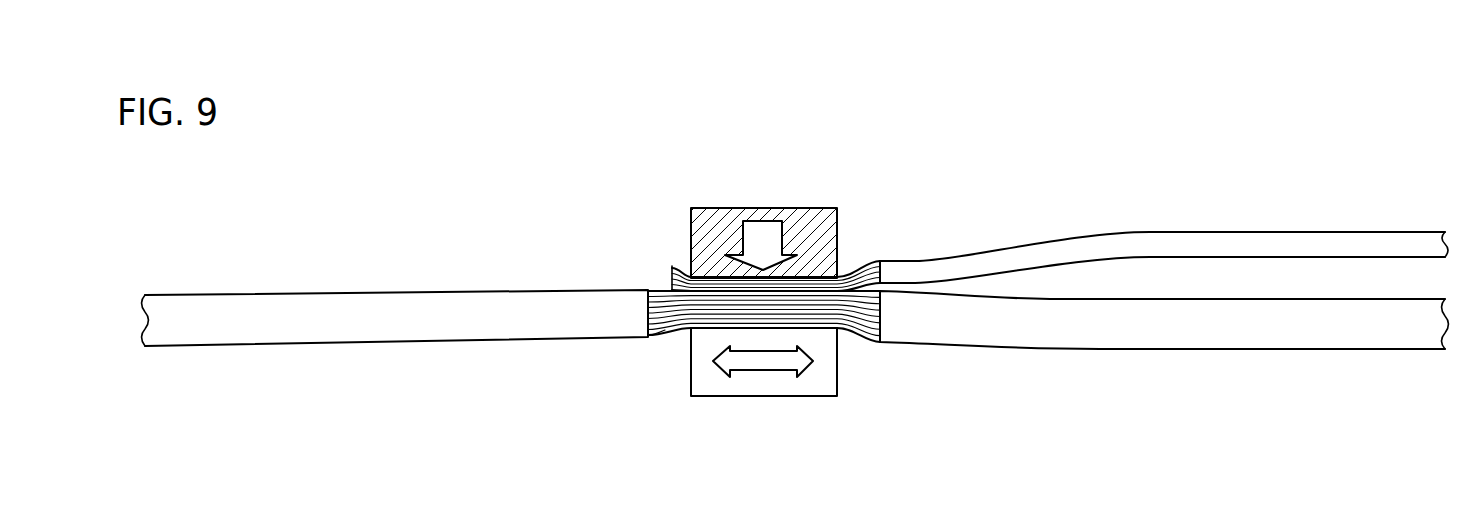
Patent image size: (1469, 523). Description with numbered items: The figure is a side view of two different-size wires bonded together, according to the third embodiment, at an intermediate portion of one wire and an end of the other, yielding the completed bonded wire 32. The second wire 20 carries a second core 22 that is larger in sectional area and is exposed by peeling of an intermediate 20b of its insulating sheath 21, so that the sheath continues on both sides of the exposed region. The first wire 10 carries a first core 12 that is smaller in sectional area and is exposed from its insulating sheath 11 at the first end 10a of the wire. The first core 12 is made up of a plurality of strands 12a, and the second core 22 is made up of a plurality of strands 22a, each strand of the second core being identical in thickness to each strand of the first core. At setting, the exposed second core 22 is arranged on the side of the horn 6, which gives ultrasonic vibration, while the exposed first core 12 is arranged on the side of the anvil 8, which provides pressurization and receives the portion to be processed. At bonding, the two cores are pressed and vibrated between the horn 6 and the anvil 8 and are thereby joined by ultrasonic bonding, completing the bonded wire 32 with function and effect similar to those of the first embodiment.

The horn 6 is at (828, 396).
The anvil 8 is at (826, 212).
The first wire 10 is at (1164, 217).
The first end 10a is at (888, 259).
The insulating sheath 11 is at (1180, 236).
The first core 12 is at (860, 262).
The strands 12a is at (680, 272).
The second wire 20 is at (1198, 349).
The intermediate 20b is at (897, 343).
The insulating sheath 21 is at (330, 346).
The second core 22 is at (856, 338).
The strands 22a is at (658, 338).
The bonded wire 32 is at (613, 378).